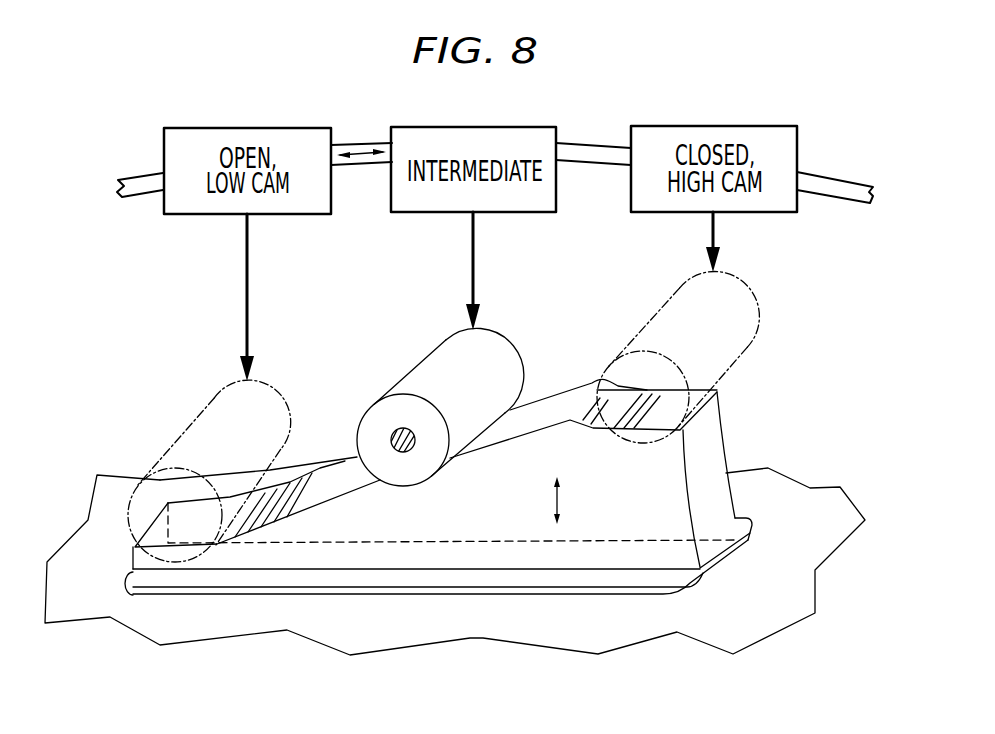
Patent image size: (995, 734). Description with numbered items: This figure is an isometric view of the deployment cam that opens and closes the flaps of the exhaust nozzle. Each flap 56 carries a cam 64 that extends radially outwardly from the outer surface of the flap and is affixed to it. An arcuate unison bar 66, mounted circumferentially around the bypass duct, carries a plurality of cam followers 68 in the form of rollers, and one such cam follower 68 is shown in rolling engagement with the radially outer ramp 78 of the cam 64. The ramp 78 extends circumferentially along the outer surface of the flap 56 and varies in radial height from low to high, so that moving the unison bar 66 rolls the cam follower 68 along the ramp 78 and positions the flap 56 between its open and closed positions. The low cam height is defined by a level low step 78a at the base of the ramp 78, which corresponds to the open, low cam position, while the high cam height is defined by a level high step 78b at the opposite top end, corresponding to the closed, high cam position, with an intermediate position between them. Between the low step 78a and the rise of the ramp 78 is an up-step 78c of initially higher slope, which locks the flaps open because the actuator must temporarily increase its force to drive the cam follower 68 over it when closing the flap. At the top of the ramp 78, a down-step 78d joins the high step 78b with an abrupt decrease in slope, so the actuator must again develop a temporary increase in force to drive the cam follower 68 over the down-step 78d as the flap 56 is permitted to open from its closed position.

The flap 56 is at (778, 599).
The cam 64 is at (471, 521).
The unison bar 66 is at (590, 165).
The cam follower 68 is at (499, 334).
The outer ramp 78 is at (538, 413).
The low step 78a is at (200, 521).
The high step 78b is at (695, 405).
The up-step 78c is at (282, 487).
The down-step 78d is at (620, 400).